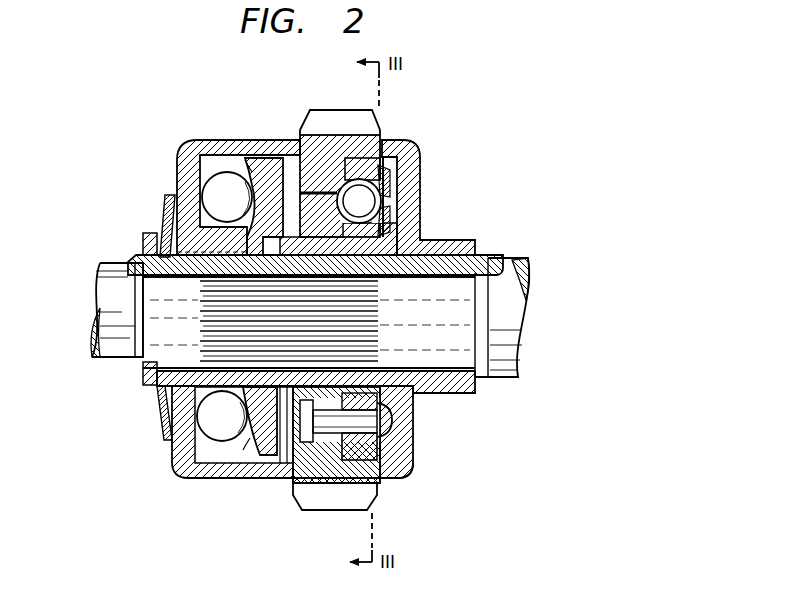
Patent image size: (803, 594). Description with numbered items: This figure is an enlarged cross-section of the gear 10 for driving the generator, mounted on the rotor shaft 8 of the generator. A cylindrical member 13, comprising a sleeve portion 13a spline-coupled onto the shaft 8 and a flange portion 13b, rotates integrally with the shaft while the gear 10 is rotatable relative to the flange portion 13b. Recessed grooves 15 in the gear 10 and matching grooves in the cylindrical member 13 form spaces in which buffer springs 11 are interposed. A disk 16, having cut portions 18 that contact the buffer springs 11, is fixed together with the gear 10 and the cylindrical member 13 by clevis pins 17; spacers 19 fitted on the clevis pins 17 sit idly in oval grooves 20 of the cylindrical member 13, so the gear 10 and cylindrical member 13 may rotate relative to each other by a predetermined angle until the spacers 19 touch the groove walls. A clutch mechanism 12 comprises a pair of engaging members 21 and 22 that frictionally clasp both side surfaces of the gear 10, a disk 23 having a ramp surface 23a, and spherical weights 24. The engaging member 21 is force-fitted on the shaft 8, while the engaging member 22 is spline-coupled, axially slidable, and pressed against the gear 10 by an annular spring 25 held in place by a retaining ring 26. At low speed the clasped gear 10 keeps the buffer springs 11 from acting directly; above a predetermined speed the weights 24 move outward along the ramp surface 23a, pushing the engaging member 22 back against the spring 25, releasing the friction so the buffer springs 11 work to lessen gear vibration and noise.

The rotor shaft 8 is at (107, 262).
The gear for driving the generator 10 is at (355, 118).
The buffer springs 11 is at (382, 203).
The clutch mechanism 12 is at (179, 139).
The cylindrical member 13 is at (359, 458).
The sleeve portion 13a is at (290, 393).
The flange portion 13b is at (363, 160).
The recessed grooves 15 is at (331, 192).
The disk 16 is at (380, 448).
The clevis pins 17 is at (371, 420).
The cut portions 18 is at (398, 190).
The spacers 19 is at (365, 403).
The oval grooves 20 is at (338, 442).
The engaging member 21 is at (408, 478).
The engaging member 22 is at (181, 470).
The disk having a slope surface 23 is at (267, 165).
The ramp surface 23a is at (243, 164).
The spherical weights 24 is at (219, 191).
The annular spring 25 is at (163, 222).
The retaining ring 26 is at (143, 378).